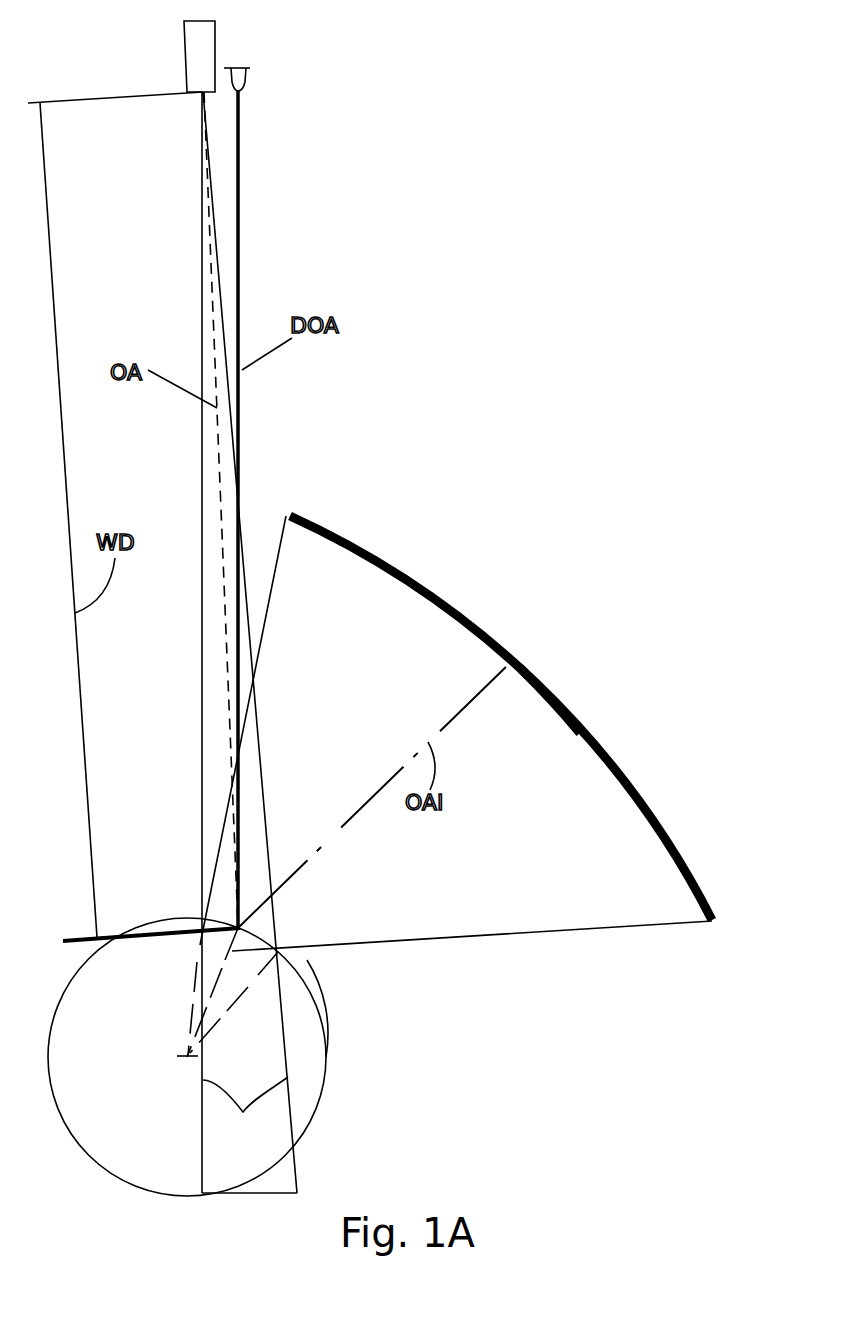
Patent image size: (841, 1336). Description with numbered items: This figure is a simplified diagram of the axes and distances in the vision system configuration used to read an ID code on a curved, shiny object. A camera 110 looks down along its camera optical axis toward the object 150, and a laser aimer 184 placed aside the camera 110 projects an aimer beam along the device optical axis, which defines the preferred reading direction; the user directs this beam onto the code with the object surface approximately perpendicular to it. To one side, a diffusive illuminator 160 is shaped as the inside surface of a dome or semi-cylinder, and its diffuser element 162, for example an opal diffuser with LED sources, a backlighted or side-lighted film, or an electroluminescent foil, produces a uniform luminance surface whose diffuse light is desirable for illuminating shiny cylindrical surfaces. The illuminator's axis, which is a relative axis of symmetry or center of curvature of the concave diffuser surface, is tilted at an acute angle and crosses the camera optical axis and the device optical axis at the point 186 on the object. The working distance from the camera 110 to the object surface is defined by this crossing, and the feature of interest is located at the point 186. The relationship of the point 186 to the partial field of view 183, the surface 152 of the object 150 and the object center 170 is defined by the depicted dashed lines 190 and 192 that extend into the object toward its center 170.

The camera 110 is at (208, 53).
The laser aimer 184 is at (243, 62).
The diffusive illuminator 160 is at (540, 716).
The diffuser element 162 is at (550, 698).
The object 150 is at (312, 1067).
The surface of the object 152 is at (340, 1033).
The point 186 is at (242, 927).
The dashed line 190 is at (232, 954).
The dashed lines 192 is at (236, 1003).
The object center 170 is at (164, 1094).
The partial field of view 183 is at (245, 1106).